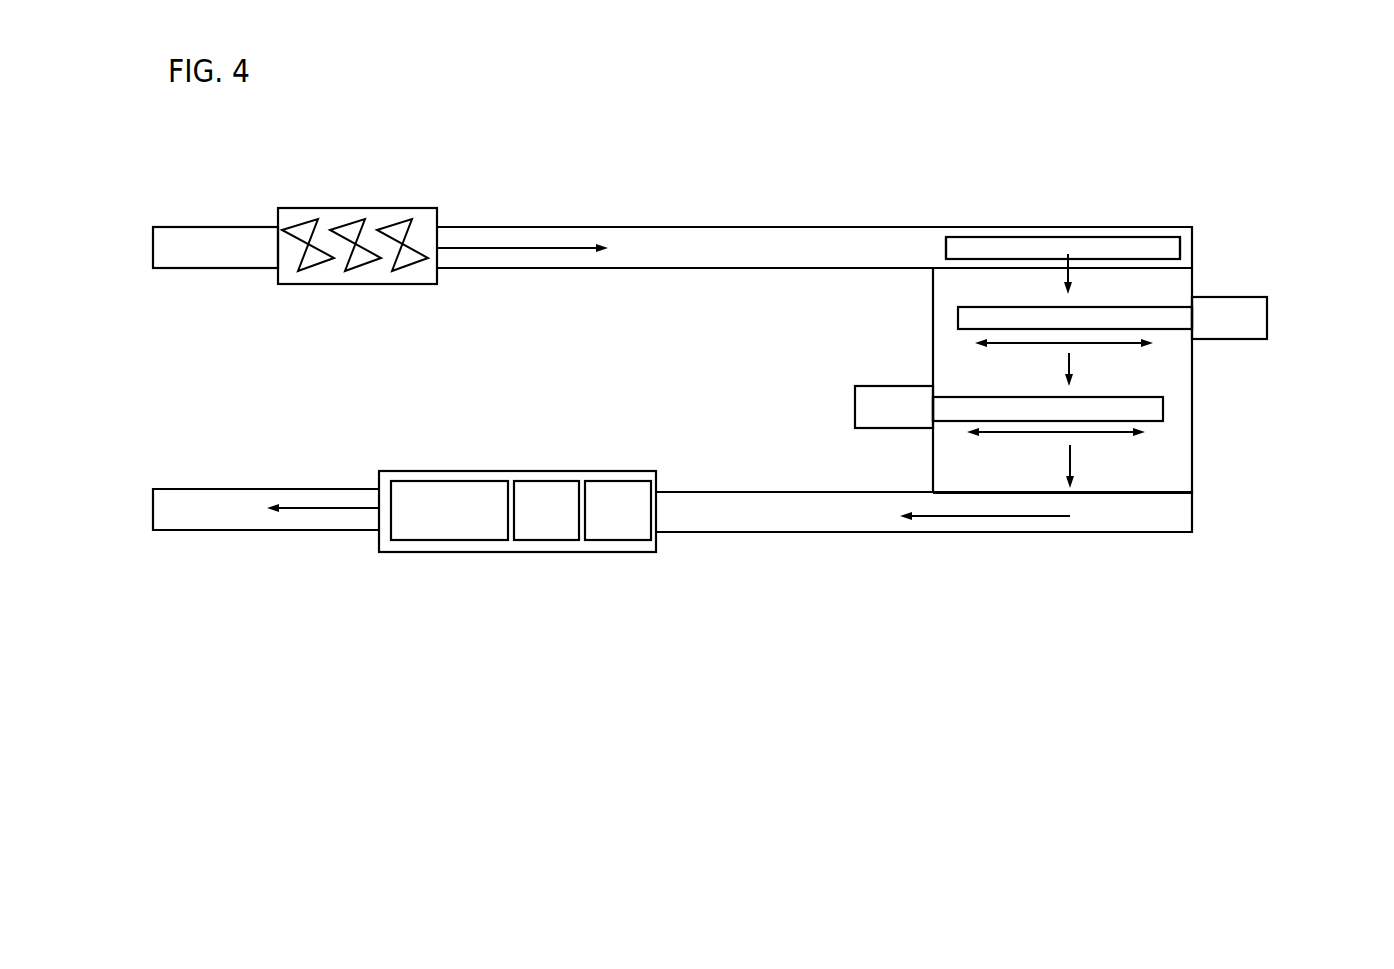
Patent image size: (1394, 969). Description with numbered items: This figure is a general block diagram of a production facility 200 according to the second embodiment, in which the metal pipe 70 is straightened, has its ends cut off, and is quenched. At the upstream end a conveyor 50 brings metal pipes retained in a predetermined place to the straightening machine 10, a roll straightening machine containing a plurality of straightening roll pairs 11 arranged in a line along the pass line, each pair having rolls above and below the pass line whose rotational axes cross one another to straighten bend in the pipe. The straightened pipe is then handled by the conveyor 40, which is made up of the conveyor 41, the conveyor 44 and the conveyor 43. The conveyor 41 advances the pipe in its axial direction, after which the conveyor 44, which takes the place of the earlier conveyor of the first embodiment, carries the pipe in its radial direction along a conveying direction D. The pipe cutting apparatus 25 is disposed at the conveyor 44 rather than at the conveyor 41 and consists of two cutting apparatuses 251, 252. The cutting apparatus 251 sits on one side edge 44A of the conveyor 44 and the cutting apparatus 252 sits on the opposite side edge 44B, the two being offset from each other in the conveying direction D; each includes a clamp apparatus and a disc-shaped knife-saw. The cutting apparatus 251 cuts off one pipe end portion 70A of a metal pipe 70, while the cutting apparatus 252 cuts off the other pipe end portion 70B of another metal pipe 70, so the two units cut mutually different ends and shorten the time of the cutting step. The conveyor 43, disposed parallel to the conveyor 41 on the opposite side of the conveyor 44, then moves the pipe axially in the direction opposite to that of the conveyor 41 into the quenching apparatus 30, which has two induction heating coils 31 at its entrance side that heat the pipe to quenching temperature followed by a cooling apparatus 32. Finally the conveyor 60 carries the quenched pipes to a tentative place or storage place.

The production facility 200 is at (803, 143).
The conveyor 50 is at (213, 230).
The straightening machine 10 is at (366, 208).
The straightening roll pairs 11 is at (313, 268).
The conveyor 40 is at (721, 213).
The conveyor 41 is at (762, 228).
The conveyor 44 is at (1009, 392).
The side edge 44A is at (1192, 437).
The side edge 44B is at (933, 475).
The metal pipe 70 is at (1082, 240).
The pipe end portion 70A is at (1190, 249).
The pipe end portion 70B is at (946, 247).
The pipe cutting apparatus 25 is at (1056, 342).
The cutting apparatus 251 is at (1268, 323).
The cutting apparatus 252 is at (855, 408).
The conveyor 43 is at (757, 534).
The conveying direction D is at (1072, 458).
The quenching apparatus 30 is at (527, 471).
The induction heating coil 31 is at (543, 528).
The cooling apparatus 32 is at (452, 528).
The conveyor 60 is at (210, 497).